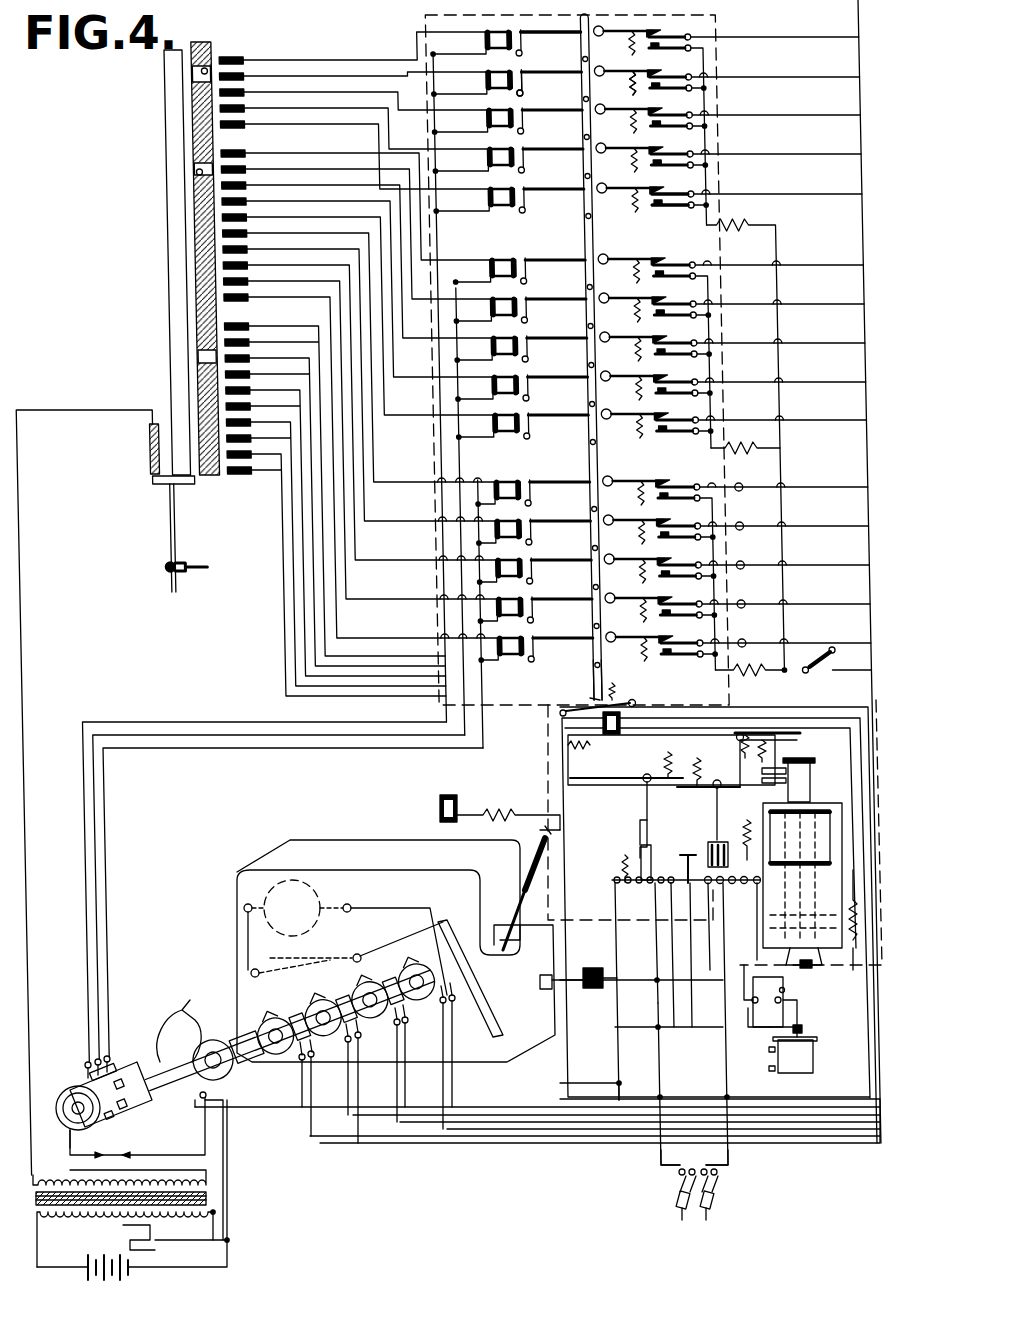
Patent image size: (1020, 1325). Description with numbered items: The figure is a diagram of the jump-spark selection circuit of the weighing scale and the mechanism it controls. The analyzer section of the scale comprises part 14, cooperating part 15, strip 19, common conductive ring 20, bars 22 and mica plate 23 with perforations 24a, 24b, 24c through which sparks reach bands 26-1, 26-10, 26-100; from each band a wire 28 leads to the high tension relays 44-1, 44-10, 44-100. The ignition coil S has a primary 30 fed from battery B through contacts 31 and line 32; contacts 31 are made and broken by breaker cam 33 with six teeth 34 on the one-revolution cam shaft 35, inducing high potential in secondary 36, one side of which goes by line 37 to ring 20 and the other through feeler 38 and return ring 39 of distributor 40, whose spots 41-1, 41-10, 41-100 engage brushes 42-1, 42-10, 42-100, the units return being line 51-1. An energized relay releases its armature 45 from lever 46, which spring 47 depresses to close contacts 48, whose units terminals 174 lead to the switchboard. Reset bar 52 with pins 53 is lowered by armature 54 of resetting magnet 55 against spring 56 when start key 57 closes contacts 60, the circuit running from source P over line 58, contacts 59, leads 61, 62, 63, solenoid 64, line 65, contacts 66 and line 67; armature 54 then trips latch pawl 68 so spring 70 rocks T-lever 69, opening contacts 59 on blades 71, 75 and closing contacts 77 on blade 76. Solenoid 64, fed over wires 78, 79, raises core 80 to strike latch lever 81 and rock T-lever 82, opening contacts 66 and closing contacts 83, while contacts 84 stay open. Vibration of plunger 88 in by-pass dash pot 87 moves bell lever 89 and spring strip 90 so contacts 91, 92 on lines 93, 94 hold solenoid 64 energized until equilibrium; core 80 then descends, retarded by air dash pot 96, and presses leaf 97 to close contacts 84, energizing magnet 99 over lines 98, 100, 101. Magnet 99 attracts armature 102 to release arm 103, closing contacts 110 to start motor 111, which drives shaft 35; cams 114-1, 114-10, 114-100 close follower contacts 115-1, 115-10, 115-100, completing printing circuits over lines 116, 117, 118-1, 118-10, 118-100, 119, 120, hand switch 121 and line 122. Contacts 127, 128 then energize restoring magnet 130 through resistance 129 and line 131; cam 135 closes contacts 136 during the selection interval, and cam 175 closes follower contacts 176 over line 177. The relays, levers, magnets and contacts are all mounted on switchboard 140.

The float 14 is at (199, 566).
The cooperating part 15 is at (167, 521).
The strip 19 is at (153, 484).
The common conductive ring 20 is at (143, 451).
The bar 22 is at (166, 299).
The mica plate 23 is at (196, 122).
The perforation 24a is at (194, 364).
The strip gap 24b is at (196, 172).
The strip gap 24c is at (209, 70).
The band 26-100 is at (244, 62).
The band 26-10 is at (245, 154).
The band 26-1 is at (245, 328).
The wire 28 is at (326, 263).
The primary 30 is at (93, 1221).
The contacts 31 is at (200, 1101).
The line 32 is at (225, 1164).
The breaker cam 33 is at (205, 1051).
The teeth 34 is at (195, 1031).
The cam shaft 35 is at (255, 1041).
The secondary 36 is at (49, 1181).
The line 37 is at (102, 410).
The feeler 38 is at (72, 1146).
The common return ring 39 is at (49, 1100).
The distributor 40 is at (90, 1073).
The conductive spot 41-1 is at (125, 1091).
The conductive spot 41-10 is at (125, 1109).
The conductive spot 41-100 is at (112, 1121).
The brush 42-1 is at (108, 1057).
The brush 42-10 is at (99, 1059).
The brush 42-100 is at (86, 1063).
The high tension relay 44-100 is at (514, 202).
The high tension relay 44-10 is at (515, 427).
The high tension relay 44-1 is at (515, 656).
The armature 45 is at (525, 83).
The lever 46 is at (536, 35).
The spring 47 is at (634, 59).
The contacts 48 is at (673, 208).
The common unit return line 51-1 is at (333, 748).
The reset bar 52 is at (582, 663).
The pin 53 is at (583, 141).
The armature 54 is at (636, 701).
The resetting magnet 55 is at (603, 736).
The spring 56 is at (620, 689).
The start key 57 is at (630, 823).
The line 58 is at (655, 1004).
The contacts 59 is at (668, 879).
The start key contacts 60 is at (693, 886).
The lead 61 is at (667, 976).
The lead 62 is at (691, 719).
The lead 63 is at (700, 733).
The solenoid 64 is at (806, 831).
The line 65 is at (760, 883).
The contacts 66 is at (708, 849).
The line 67 is at (724, 1074).
The latch pawl 68 is at (555, 729).
The T-lever 69 is at (612, 779).
The spring 70 is at (666, 763).
The spring blade 71 is at (654, 841).
The blade 75 is at (648, 886).
The spring blade 76 is at (640, 854).
The contacts 77 is at (612, 886).
The connecting wire 78 is at (615, 921).
The connecting wire 79 is at (619, 1073).
The core 80 is at (805, 773).
The latch lever 81 is at (775, 731).
The T-lever 82 is at (735, 737).
The contacts 83 is at (752, 851).
The contacts 84 is at (774, 785).
The auxiliary by-pass dash pot 87 is at (815, 1051).
The plunger 88 is at (803, 1031).
The bell lever 89 is at (779, 1026).
The spring strip 90 is at (768, 1050).
The contacts 91 is at (770, 996).
The stationary contacts 92 is at (752, 1001).
The line 93 is at (752, 986).
The line 94 is at (748, 1021).
The air dash pot 96 is at (836, 959).
The upper leaf 97 is at (763, 749).
The line 98 is at (548, 827).
The magnet 99 is at (456, 801).
The line 100 is at (518, 799).
The line 101 is at (735, 801).
The lever armature member 102 is at (493, 926).
The arm 103 is at (540, 989).
The contacts 110 is at (280, 959).
The motor 111 is at (330, 868).
The cam 114-1 is at (425, 906).
The cam 114-10 is at (372, 959).
The cam 114-100 is at (323, 998).
The follower contacts 115-1 is at (404, 1026).
The follower contacts 115-10 is at (356, 1041).
The follower contacts 115-100 is at (313, 1062).
The line 116 is at (553, 1091).
The line 117 is at (489, 1031).
The line 118-1 is at (446, 1109).
The line 118-10 is at (399, 1071).
The line 118-100 is at (349, 1077).
The line 119 is at (795, 201).
The line 120 is at (778, 399).
The hand switch 121 is at (815, 659).
The line 122 is at (860, 688).
The spring blade contacts 127 is at (578, 989).
The spring blade contacts 128 is at (518, 919).
The resistance 129 is at (620, 867).
The restoring magnet 130 is at (633, 796).
The line 131 is at (690, 986).
The cam 135 is at (190, 1001).
The contacts 136 is at (234, 1109).
The switchboard 140 is at (427, 675).
The terminals 174 is at (734, 546).
The cam 175 is at (266, 1020).
The follower contacts 176 is at (300, 1056).
The line 177 is at (564, 1141).
The battery B is at (133, 1195).
The ignition coil S is at (208, 1201).
The power source P is at (694, 1181).